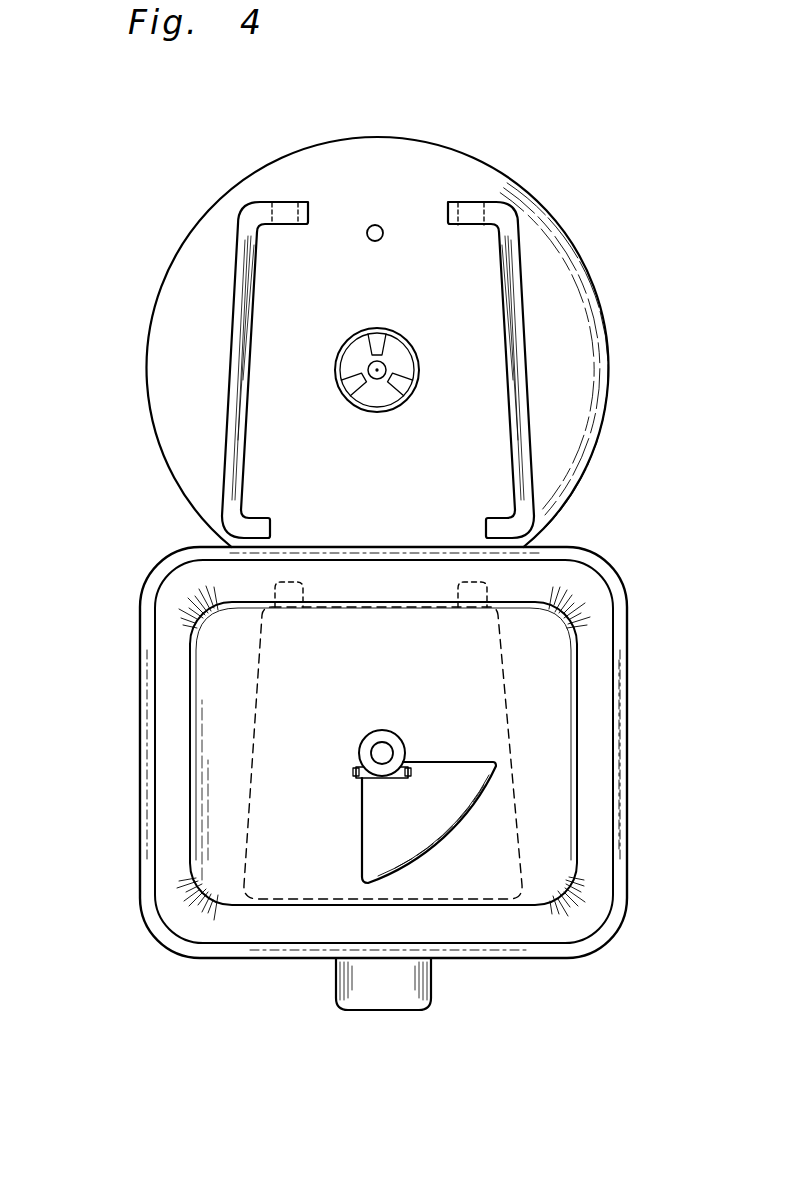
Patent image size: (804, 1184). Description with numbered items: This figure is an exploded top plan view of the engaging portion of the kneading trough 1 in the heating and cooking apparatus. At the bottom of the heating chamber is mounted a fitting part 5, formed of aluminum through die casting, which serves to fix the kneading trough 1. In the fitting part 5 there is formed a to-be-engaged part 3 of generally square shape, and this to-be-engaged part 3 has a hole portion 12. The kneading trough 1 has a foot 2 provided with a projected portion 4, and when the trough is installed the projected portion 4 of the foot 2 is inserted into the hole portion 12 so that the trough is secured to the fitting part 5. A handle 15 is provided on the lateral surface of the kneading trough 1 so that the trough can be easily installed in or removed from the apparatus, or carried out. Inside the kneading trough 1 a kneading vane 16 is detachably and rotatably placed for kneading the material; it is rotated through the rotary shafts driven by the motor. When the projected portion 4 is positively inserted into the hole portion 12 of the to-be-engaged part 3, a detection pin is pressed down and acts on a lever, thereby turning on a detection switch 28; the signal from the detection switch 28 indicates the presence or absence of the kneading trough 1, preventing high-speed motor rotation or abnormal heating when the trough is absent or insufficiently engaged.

The kneading trough 1 is at (140, 714).
The foot 2 is at (247, 782).
The to-be-engaged part 3 is at (505, 270).
The projected portion 4 is at (458, 582).
The fitting part 5 is at (553, 330).
The hole portion 12 is at (465, 203).
The handle 15 is at (426, 1000).
The kneading vane 16 is at (477, 825).
The detection switch 28 is at (368, 236).